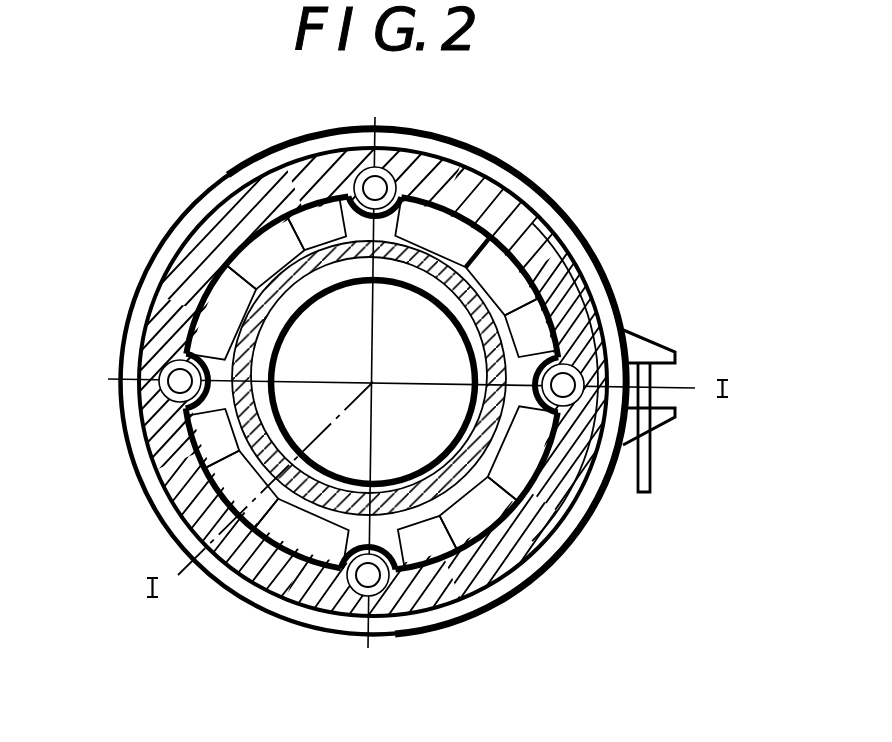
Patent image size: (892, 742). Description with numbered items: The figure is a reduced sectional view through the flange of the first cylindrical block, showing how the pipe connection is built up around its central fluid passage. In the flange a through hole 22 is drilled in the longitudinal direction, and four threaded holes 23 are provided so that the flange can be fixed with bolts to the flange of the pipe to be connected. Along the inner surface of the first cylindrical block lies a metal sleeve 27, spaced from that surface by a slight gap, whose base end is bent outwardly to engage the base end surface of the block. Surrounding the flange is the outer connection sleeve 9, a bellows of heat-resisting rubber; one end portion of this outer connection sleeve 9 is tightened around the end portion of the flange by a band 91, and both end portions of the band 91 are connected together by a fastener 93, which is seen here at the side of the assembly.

The outer connection sleeve 9 is at (570, 232).
The through hole 22 is at (240, 240).
The threaded holes 23 is at (584, 306).
The metal sleeve 27 is at (477, 236).
The band 91 is at (565, 550).
The fastener 93 is at (653, 397).